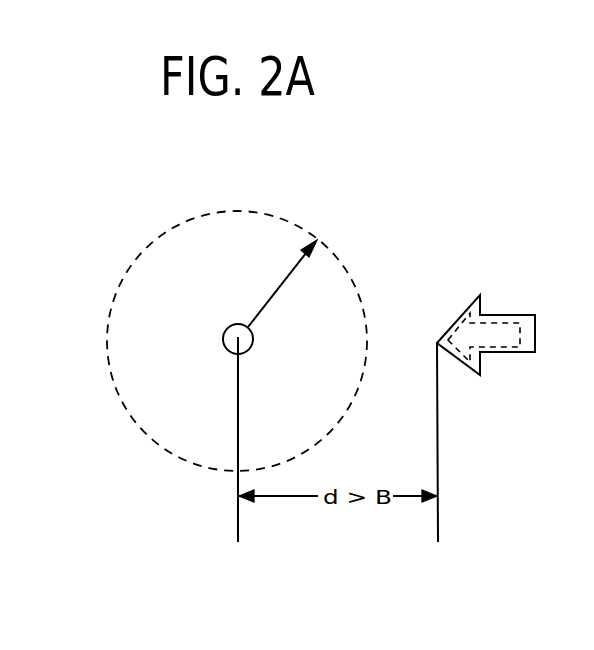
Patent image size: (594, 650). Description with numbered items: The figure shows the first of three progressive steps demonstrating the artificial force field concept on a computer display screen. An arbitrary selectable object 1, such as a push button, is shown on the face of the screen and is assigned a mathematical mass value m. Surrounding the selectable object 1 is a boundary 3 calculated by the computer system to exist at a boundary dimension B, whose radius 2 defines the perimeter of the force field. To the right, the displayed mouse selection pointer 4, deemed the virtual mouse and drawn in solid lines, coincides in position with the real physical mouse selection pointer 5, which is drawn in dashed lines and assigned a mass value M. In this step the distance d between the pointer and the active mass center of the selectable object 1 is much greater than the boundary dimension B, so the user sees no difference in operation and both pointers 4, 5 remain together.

The selectable object 1 is at (230, 326).
The radius 2 is at (295, 265).
The boundary 3 is at (347, 275).
The displayed mouse selection pointer 4 is at (462, 316).
The real physical mouse selection pointer 5 is at (503, 338).